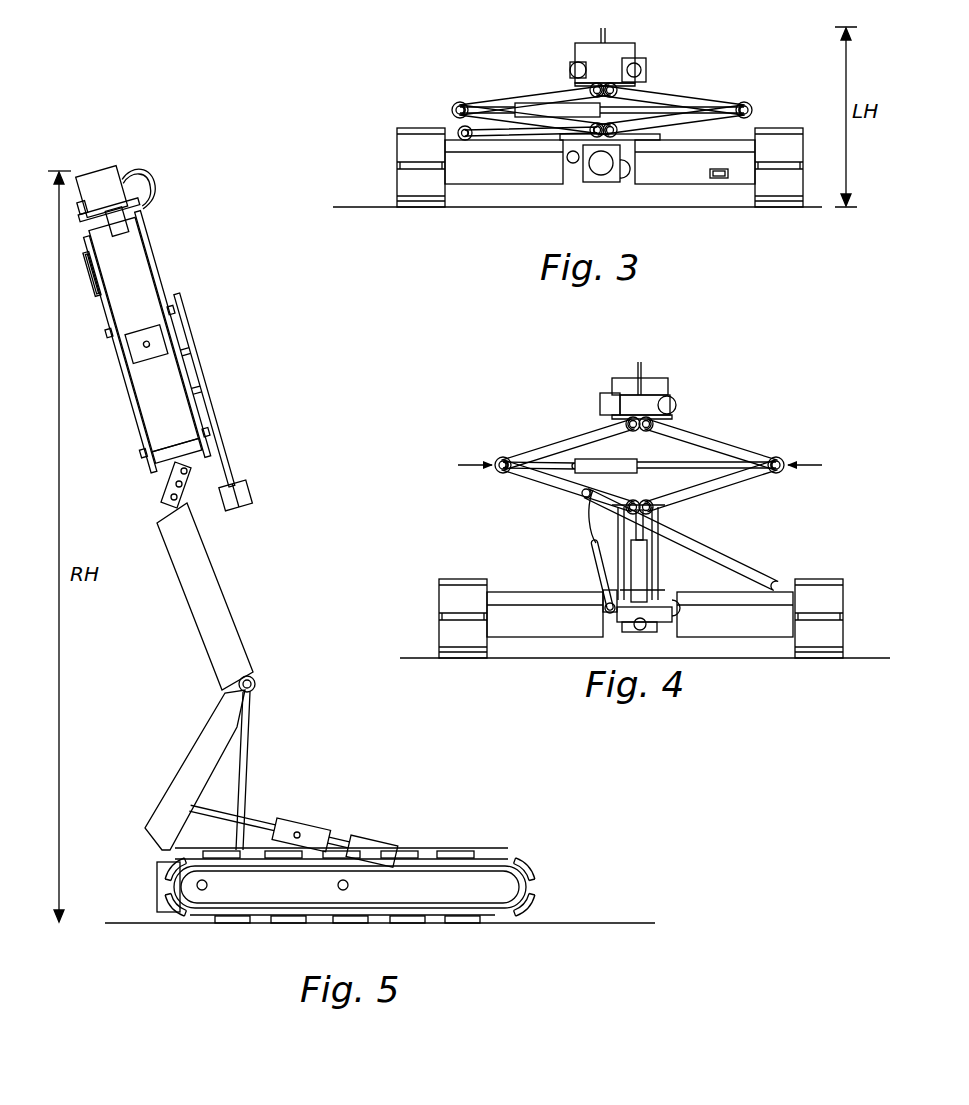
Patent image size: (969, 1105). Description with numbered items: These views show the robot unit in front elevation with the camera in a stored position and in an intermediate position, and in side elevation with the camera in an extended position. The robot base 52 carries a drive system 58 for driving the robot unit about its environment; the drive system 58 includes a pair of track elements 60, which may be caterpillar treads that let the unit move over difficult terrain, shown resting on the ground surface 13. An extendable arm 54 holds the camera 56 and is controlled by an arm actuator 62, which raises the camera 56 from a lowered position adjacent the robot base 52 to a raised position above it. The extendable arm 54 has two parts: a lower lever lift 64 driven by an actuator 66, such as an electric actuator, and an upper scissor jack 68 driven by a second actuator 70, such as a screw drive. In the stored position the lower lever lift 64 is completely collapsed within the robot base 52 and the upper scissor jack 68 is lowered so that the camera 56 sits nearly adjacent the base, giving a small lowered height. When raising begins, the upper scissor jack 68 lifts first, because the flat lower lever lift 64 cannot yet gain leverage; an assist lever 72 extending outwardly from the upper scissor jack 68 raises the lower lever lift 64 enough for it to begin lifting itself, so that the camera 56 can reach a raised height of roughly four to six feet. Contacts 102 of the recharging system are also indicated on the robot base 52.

In FIG. 3, the ground surface 13 is at (336, 207).
In FIG. 4, the ground surface 13 is at (868, 658).
In FIG. 5, the ground surface 13 is at (118, 922).
In FIG. 3, the robot base 52 is at (592, 158).
In FIG. 4, the robot base 52 is at (520, 630).
In FIG. 5, the robot base 52 is at (520, 835).
In FIG. 3, the extendable arm 54 is at (620, 74).
In FIG. 4, the extendable arm 54 is at (640, 487).
In FIG. 5, the extendable arm 54 is at (198, 486).
In FIG. 3, the camera 56 is at (578, 62).
In FIG. 4, the camera 56 is at (678, 405).
In FIG. 5, the camera 56 is at (112, 184).
In FIG. 3, the drive system 58 is at (610, 173).
In FIG. 4, the drive system 58 is at (606, 657).
In FIG. 5, the drive system 58 is at (389, 860).
In FIG. 3, the track elements 60 is at (776, 128).
In FIG. 4, the track elements 60 is at (447, 602).
In FIG. 5, the track elements 60 is at (527, 878).
In FIG. 3, the arm actuator 62 is at (602, 73).
In FIG. 4, the arm actuator 62 is at (642, 437).
In FIG. 5, the arm actuator 62 is at (292, 814).
In FIG. 4, the lower lever lift 64 is at (585, 570).
In FIG. 5, the lower lever lift 64 is at (270, 640).
In FIG. 4, the actuator 66 is at (640, 572).
In FIG. 5, the actuator 66 is at (298, 818).
In FIG. 3, the upper scissor jack 68 is at (620, 74).
In FIG. 4, the upper scissor jack 68 is at (640, 487).
In FIG. 5, the upper scissor jack 68 is at (153, 326).
In FIG. 3, the second actuator 70 is at (655, 100).
In FIG. 4, the second actuator 70 is at (722, 458).
In FIG. 4, the assist lever 72 is at (758, 578).
In FIG. 3, the contacts 102 is at (718, 180).